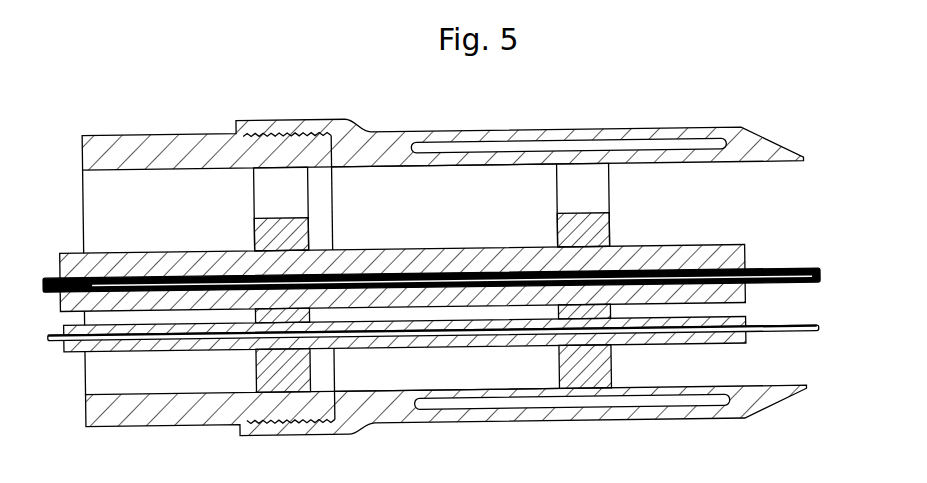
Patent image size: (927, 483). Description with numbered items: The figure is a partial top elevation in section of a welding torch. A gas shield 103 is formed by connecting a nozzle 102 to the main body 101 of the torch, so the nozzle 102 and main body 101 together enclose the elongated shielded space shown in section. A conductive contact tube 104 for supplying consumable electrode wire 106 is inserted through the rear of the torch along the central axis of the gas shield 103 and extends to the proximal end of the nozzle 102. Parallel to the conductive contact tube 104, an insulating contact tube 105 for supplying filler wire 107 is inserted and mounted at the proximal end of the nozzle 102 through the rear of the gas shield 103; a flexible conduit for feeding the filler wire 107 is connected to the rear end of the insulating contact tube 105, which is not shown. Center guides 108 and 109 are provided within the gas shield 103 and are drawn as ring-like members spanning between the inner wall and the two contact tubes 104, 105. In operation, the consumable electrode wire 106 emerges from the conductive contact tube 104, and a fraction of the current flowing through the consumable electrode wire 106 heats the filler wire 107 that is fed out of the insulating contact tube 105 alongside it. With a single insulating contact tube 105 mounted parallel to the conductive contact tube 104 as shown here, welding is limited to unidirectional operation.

The main body 101 is at (140, 136).
The nozzle 102 is at (590, 131).
The gas shield 103 is at (466, 225).
The conductive contact tube 104 is at (721, 249).
The insulating contact tube 105 is at (737, 343).
The consumable electrode wire 106 is at (814, 268).
The filler wire 107 is at (812, 326).
The center guide 108 is at (606, 228).
The center guide 109 is at (257, 228).